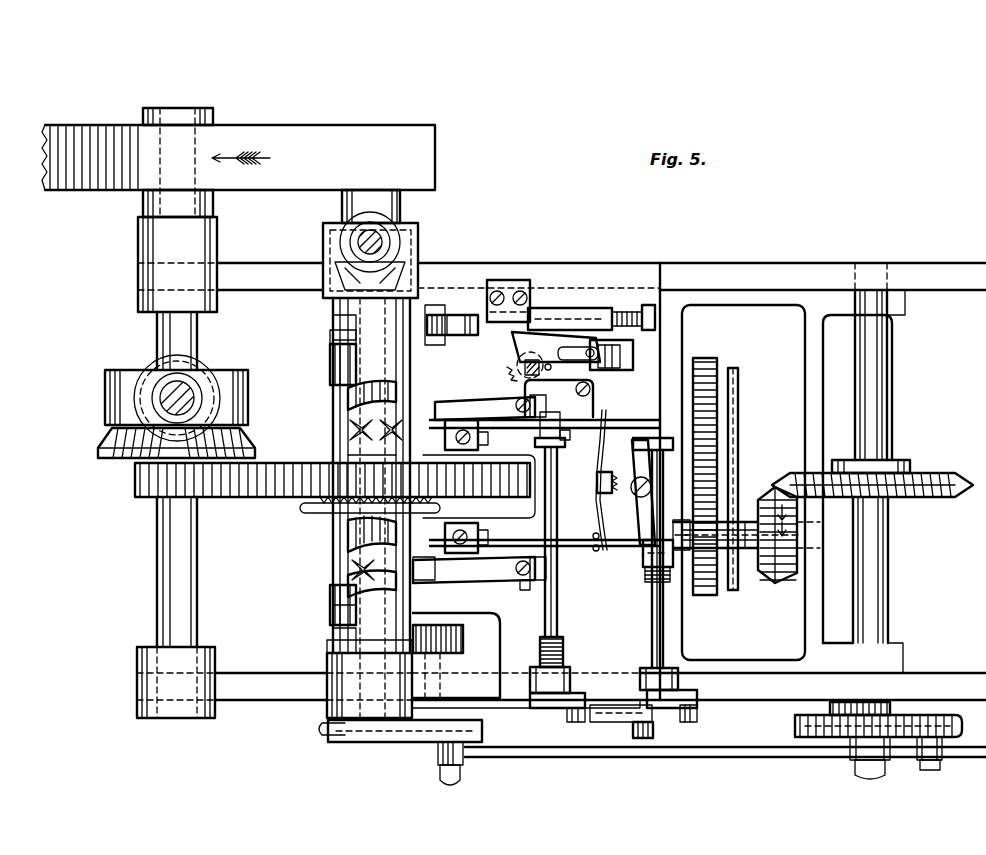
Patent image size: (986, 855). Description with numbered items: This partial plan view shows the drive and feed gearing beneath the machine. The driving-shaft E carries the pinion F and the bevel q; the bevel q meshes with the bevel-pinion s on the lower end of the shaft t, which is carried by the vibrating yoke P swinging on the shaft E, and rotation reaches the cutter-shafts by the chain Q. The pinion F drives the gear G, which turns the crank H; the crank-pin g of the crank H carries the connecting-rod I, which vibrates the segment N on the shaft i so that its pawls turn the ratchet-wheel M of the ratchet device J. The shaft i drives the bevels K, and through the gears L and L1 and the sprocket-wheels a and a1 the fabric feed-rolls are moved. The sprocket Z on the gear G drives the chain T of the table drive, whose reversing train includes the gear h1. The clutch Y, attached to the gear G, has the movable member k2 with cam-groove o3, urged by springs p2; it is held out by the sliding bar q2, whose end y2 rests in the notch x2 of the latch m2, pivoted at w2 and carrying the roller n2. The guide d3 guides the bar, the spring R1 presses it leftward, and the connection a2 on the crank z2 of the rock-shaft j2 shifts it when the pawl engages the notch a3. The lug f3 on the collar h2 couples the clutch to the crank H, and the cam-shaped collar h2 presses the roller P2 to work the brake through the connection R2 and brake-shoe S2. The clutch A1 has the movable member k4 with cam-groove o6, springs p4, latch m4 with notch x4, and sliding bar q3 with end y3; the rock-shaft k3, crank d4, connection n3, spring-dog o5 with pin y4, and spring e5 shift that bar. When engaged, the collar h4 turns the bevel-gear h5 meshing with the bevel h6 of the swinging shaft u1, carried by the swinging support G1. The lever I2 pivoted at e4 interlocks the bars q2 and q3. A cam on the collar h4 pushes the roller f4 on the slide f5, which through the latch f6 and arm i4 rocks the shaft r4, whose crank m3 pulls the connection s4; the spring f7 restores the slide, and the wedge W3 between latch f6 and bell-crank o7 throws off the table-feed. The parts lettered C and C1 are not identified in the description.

The driving-shaft E is at (197, 576).
The vibrating yoke P is at (160, 393).
The bevel-pinion s is at (205, 365).
The shaft t is at (177, 401).
The bevel q is at (105, 444).
The pinion F is at (135, 482).
The gear G is at (328, 470).
The sprocket Z is at (335, 512).
The chain T is at (300, 508).
The upper rail C1 is at (956, 263).
The lower rail C is at (955, 673).
The bevel h6 is at (342, 216).
The swinging support G1 is at (362, 251).
The swinging shaft u1 is at (378, 240).
The bevel-gear h5 is at (335, 270).
The collar h4 is at (333, 328).
The springs p4 is at (330, 338).
The movable clutch member k4 is at (330, 370).
The cam-groove o6 is at (346, 396).
The clutch A1 is at (340, 442).
The clutch Y is at (330, 530).
The cam-groove o3 is at (346, 574).
The movable clutch member k2 is at (330, 600).
The springs p2 is at (333, 612).
The lug f3 is at (333, 640).
The collar h2 is at (327, 648).
The crank H is at (395, 770).
The gear h1 is at (320, 734).
The crank-pin g is at (463, 774).
The adjustable connection R2 is at (522, 712).
The roller P2 is at (463, 639).
The chain Q is at (440, 660).
The roller f4 is at (450, 322).
The slide f5 is at (548, 316).
The spring f7 is at (627, 312).
The latch f6 is at (556, 350).
The arm i4 is at (620, 356).
The wedge W3 is at (520, 366).
The bell-crank lever o7 is at (557, 370).
The notch x4 is at (446, 405).
The latch m4 is at (482, 410).
The sliding bar q3 is at (520, 428).
The bar end y3 is at (445, 436).
The rock-shaft k3 is at (560, 570).
The pin y4 is at (560, 447).
The spring-dog o5 is at (570, 440).
The spring e5 is at (560, 645).
The crank d4 is at (550, 708).
The crank connection n3 is at (575, 726).
The crank m3 is at (621, 724).
The connection s4 is at (645, 738).
The spring R1 is at (600, 530).
The interlocking lever I2 is at (640, 472).
The pivot e4 is at (639, 498).
The rock-shaft j2 is at (652, 600).
The notch a3 is at (643, 560).
The rock-shaft r4 is at (645, 578).
The crank z2 is at (672, 711).
The connection a2 is at (697, 714).
The sliding bar q2 is at (520, 556).
The bar end y2 is at (451, 538).
The guide d3 is at (480, 537).
The notch x2 is at (450, 575).
The roller n2 is at (425, 576).
The latch m2 is at (512, 578).
The pivot w2 is at (525, 590).
The gear L1 is at (704, 358).
The gear L is at (705, 595).
The sprocket-wheel a1 is at (738, 380).
The bevels K is at (792, 480).
The sprocket-wheel a is at (758, 506).
The shaft i is at (888, 570).
The ratchet device J is at (795, 727).
The brake-shoe S2 is at (850, 704).
The ratchet-wheel M is at (920, 715).
The segment N is at (962, 734).
The connecting-rod I is at (683, 757).